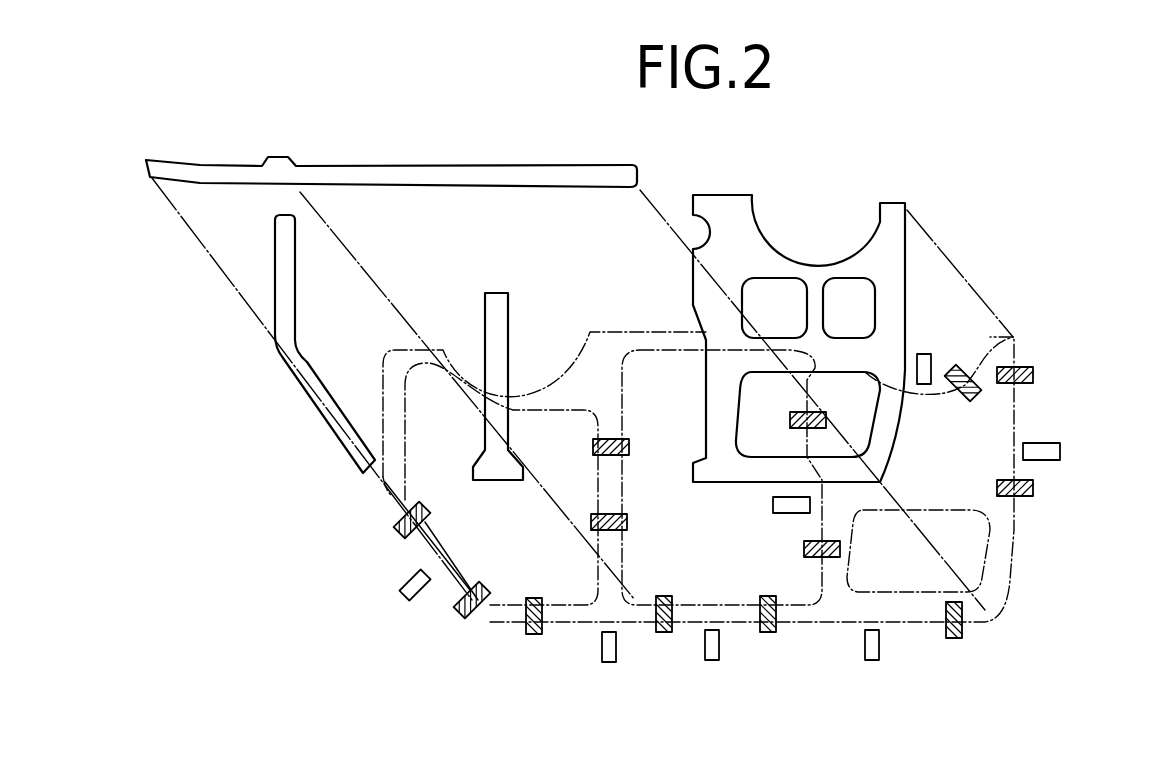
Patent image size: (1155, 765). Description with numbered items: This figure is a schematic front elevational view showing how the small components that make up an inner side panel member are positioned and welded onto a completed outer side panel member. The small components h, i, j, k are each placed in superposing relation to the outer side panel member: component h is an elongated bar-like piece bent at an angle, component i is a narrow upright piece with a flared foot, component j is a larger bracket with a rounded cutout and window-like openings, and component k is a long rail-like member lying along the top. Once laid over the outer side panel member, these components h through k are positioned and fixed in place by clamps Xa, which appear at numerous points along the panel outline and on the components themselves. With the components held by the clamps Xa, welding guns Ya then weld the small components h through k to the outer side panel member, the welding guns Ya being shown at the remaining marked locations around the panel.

The small component of inner side panel member k is at (572, 172).
The small component of inner side panel member h is at (307, 393).
The small component of inner side panel member i is at (500, 322).
The small component of inner side panel member j is at (882, 237).
The clamps Xa is at (398, 526).
The welding guns Ya is at (400, 592).